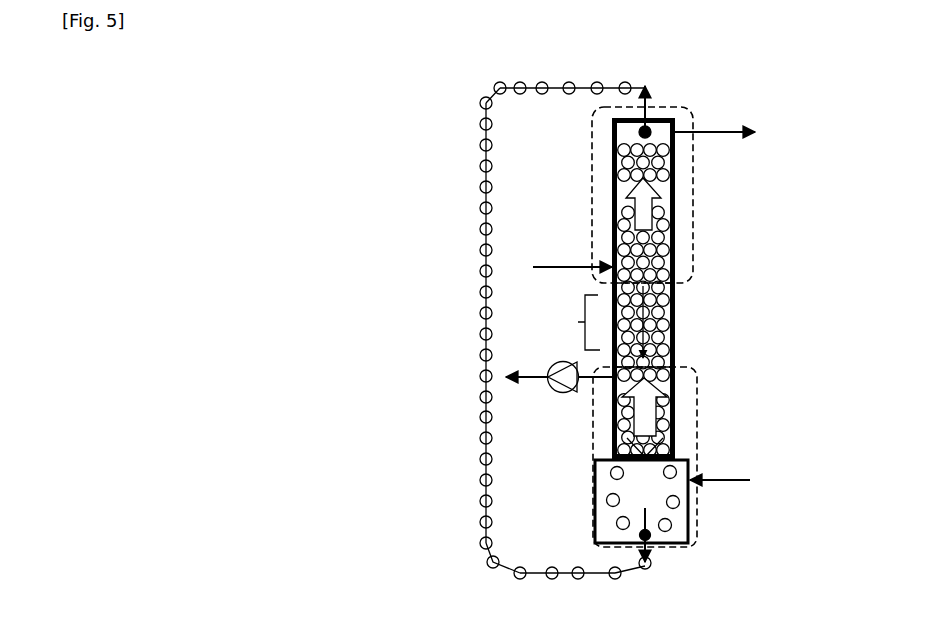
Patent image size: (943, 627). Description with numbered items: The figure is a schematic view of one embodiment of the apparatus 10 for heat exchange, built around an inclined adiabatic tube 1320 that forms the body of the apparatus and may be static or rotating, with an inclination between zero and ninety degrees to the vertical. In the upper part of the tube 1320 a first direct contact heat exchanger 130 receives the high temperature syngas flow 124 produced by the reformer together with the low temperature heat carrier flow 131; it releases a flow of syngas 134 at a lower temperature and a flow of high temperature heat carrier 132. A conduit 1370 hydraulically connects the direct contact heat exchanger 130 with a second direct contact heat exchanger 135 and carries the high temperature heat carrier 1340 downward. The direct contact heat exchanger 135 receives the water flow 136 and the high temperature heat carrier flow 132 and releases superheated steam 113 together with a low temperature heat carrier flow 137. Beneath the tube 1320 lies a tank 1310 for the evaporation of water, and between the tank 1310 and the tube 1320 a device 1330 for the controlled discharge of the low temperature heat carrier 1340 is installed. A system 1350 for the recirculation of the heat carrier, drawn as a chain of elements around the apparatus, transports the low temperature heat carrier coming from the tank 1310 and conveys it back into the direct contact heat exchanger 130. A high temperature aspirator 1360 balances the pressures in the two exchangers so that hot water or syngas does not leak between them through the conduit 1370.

The apparatus for the heat exchange 10 is at (375, 158).
The system for the recirculation of the heat carrier 1350 is at (484, 388).
The direct contact heat exchanger 130 is at (697, 205).
The low temperature heat carrier flow 131 is at (648, 96).
The flow of syngas at a lower temperature 134 is at (750, 126).
The high temperature syngas flow 124 is at (553, 263).
The conduit 1370 is at (585, 322).
The inclined adiabatic tube 1320 is at (676, 305).
The heat carrier 1340 is at (676, 327).
The high temperature heat carrier flow 132 is at (676, 351).
The system for the controlled discharge of the heat carrier 1330 is at (697, 455).
The direct contact heat exchanger 135 is at (594, 450).
The tank 1310 is at (689, 529).
The water flow 136 is at (756, 484).
The low temperature heat carrier flow 137 is at (650, 566).
The superheated steam 113 is at (512, 378).
The high temperature aspirator 1360 is at (563, 391).